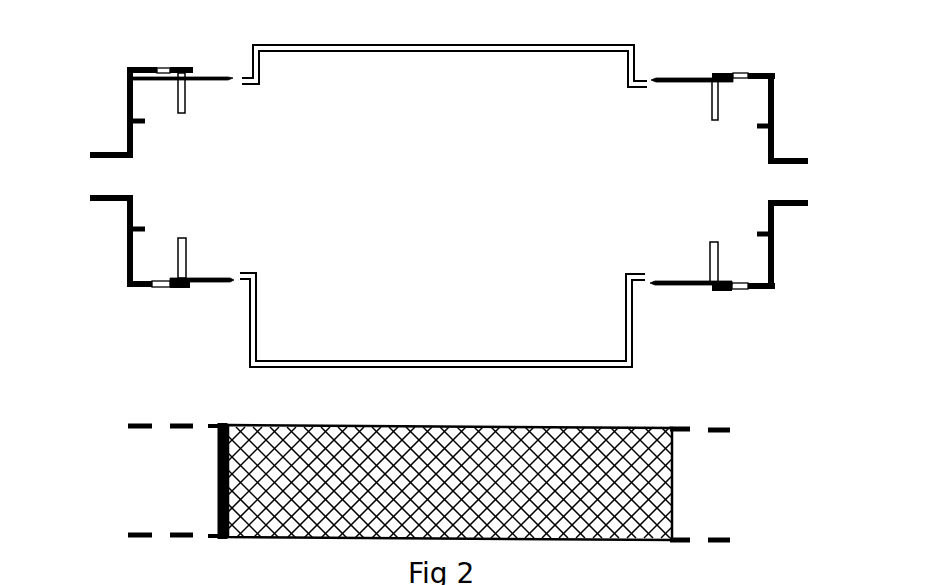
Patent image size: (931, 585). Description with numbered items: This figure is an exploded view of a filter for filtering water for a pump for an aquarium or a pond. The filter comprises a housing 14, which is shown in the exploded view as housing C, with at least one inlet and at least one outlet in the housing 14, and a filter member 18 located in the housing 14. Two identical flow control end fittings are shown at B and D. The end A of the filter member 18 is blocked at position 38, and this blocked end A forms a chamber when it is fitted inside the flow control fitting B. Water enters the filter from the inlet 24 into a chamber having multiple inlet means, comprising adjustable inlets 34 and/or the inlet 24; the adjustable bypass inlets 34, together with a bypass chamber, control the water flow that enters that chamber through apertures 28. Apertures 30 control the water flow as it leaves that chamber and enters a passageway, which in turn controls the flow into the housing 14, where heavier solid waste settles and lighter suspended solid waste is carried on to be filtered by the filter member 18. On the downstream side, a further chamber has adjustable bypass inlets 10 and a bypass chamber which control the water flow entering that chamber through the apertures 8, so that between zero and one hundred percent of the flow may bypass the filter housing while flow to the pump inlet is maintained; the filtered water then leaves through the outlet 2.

The outlet 2 is at (800, 183).
The apertures 8 is at (700, 433).
The adjustable bypass inlets 10 is at (742, 72).
The housing 14 is at (533, 45).
The filter member 18 is at (613, 421).
The inlet 24 is at (102, 180).
The apertures 28 is at (158, 428).
The apertures 30 is at (203, 427).
The adjustable bypass inlets 34 is at (167, 68).
The blocked position 38 is at (217, 500).
The end of the filter member A is at (220, 423).
The flow control end fitting B is at (130, 68).
The housing C is at (637, 48).
The flow control end fitting D is at (775, 72).